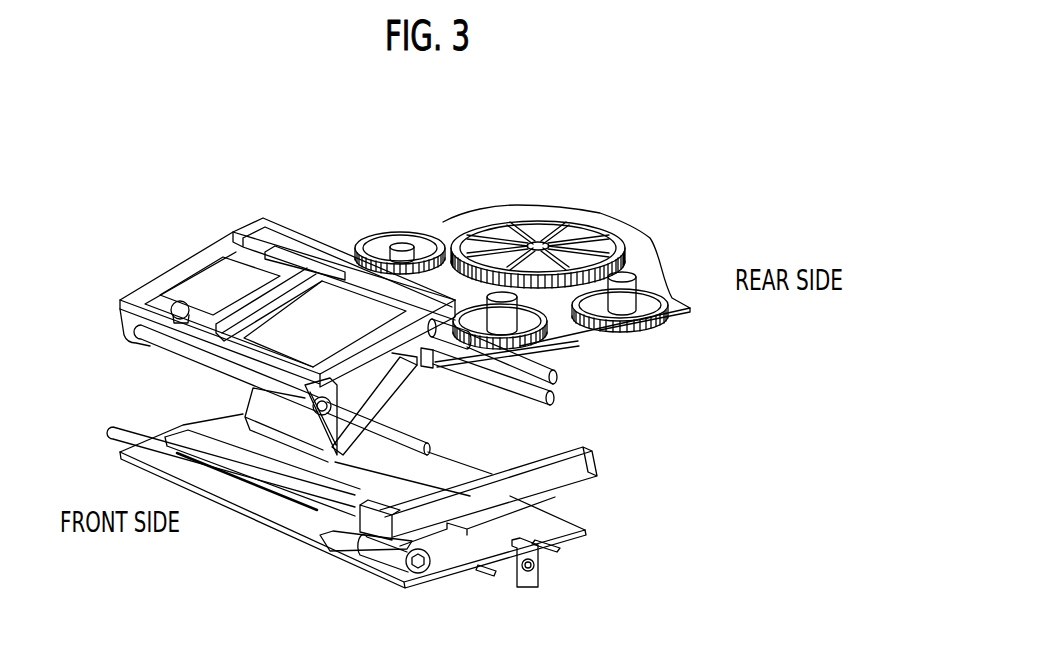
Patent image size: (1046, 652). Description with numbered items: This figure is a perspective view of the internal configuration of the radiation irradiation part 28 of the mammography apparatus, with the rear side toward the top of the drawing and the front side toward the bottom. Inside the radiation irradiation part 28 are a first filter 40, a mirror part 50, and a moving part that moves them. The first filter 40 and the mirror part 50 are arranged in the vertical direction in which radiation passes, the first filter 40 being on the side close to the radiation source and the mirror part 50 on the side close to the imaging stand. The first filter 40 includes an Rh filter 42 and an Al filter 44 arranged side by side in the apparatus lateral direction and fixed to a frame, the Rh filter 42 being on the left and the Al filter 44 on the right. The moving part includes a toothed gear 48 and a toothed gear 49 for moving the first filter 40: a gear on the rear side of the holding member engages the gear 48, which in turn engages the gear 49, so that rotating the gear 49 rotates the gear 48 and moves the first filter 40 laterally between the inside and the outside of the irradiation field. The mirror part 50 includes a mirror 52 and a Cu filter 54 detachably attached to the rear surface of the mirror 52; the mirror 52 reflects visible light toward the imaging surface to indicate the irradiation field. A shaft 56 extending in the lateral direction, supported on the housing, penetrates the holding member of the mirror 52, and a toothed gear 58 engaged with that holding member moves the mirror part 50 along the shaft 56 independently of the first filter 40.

The radiation irradiation part 28 is at (620, 112).
The first filter 40 is at (162, 284).
The Rh filter 42 is at (214, 283).
The Al filter 44 is at (310, 332).
The toothed gear 48 is at (374, 231).
The toothed gear 49 is at (541, 238).
The mirror part 50 is at (265, 411).
The mirror 52 is at (383, 393).
The Cu filter 54 is at (367, 378).
The shaft 56 is at (558, 376).
The toothed gear 58 is at (567, 346).